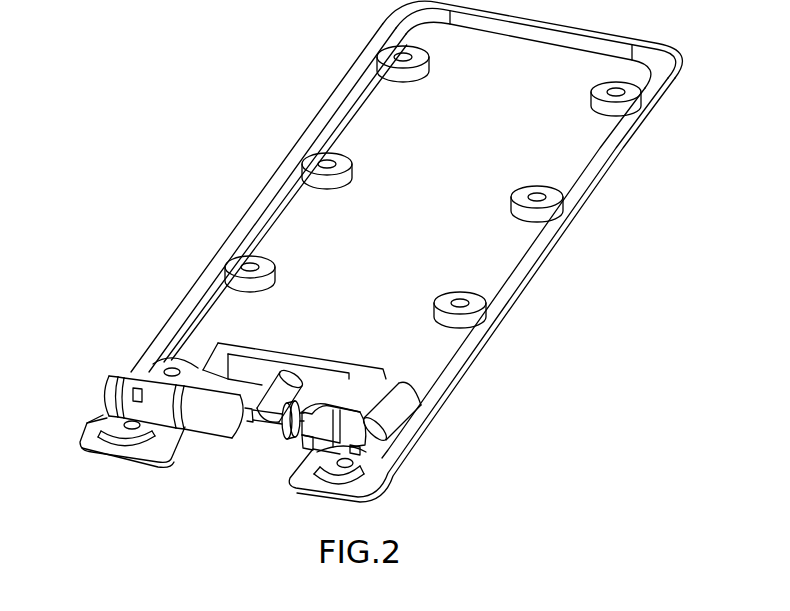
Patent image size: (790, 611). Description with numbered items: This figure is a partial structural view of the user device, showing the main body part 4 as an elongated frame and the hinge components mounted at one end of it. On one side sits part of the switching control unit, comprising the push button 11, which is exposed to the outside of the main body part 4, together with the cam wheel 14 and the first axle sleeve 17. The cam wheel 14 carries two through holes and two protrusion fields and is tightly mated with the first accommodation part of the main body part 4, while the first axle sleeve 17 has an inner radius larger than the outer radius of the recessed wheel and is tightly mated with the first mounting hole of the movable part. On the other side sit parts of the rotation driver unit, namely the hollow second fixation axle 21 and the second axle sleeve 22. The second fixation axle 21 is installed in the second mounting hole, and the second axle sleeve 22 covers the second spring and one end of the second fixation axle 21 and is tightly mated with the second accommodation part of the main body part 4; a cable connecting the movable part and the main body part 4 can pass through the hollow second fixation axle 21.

The main body part 4 is at (293, 245).
The push button 11 is at (103, 388).
The cam wheel 14 is at (162, 400).
The first axle sleeve 17 is at (215, 400).
The second fixation axle 21 is at (285, 445).
The second axle sleeve 22 is at (325, 420).